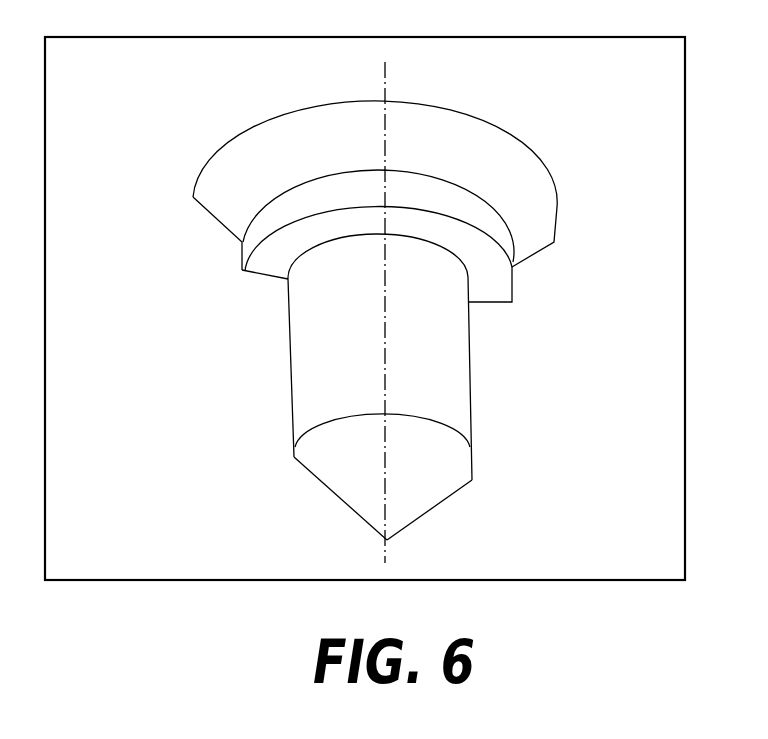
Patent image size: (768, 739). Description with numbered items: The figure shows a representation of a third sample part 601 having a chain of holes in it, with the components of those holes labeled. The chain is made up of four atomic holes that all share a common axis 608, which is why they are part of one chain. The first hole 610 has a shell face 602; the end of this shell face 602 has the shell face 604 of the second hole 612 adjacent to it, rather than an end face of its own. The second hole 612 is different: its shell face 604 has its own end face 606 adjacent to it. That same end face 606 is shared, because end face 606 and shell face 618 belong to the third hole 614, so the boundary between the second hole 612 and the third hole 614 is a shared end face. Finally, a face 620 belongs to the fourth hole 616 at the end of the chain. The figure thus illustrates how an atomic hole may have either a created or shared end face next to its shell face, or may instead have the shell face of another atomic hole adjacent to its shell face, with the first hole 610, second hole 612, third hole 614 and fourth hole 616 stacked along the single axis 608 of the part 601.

The part 601 is at (650, 231).
The shell face 602 is at (484, 146).
The shell face 604 is at (497, 228).
The end face 606 is at (490, 280).
The axis 608 is at (385, 78).
The first hole 610 is at (228, 207).
The second hole 612 is at (260, 273).
The third hole 614 is at (313, 370).
The fourth hole 616 is at (328, 473).
The shell face 618 is at (455, 362).
The face 620 is at (427, 492).